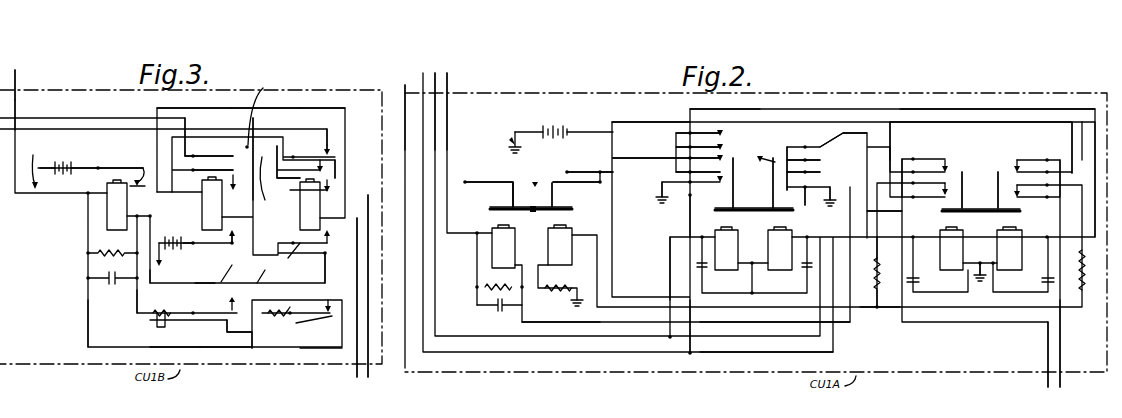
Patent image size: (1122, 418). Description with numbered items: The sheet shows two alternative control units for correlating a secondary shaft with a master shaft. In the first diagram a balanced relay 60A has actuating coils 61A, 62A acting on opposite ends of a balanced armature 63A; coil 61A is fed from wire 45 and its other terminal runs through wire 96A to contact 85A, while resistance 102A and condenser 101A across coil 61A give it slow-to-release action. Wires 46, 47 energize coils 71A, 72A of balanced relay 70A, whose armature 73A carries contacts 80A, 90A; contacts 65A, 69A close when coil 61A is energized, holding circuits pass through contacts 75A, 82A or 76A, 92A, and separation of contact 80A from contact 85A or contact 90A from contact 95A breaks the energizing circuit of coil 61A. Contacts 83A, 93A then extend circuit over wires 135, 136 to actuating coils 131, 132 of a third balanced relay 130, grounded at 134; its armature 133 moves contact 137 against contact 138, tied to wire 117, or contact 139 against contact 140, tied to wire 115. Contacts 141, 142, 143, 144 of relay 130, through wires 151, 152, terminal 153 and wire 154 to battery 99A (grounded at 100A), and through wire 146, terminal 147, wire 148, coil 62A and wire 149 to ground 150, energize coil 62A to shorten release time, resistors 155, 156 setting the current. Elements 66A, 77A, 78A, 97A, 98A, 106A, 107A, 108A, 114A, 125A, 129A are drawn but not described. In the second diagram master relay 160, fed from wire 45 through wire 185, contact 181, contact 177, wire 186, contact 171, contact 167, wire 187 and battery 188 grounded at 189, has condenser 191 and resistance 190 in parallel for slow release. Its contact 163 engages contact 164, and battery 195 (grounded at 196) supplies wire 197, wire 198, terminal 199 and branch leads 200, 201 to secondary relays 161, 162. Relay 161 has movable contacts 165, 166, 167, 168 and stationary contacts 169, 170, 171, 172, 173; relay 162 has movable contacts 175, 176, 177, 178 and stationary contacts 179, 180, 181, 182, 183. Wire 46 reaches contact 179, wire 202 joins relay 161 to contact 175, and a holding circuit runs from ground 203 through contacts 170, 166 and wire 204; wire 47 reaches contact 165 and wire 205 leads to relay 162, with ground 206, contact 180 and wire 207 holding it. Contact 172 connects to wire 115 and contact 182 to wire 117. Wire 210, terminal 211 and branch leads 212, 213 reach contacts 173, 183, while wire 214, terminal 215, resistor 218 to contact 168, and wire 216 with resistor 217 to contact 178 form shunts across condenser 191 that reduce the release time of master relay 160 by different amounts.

In FIG. 3, the wire 45 is at (20, 76).
In FIG. 2, the wire 45 is at (448, 78).
In FIG. 2, the wire 46 is at (405, 88).
In FIG. 3, the wire 47 is at (16, 72).
In FIG. 2, the wire 47 is at (435, 75).
In FIG. 3, the control wire 115 is at (356, 377).
In FIG. 2, the control wire 115 is at (1047, 378).
In FIG. 3, the wire 117 is at (368, 378).
In FIG. 2, the wire 117 is at (1061, 382).
In FIG. 3, the master relay 160 is at (107, 217).
In FIG. 2, the master relay 160 is at (1045, 279).
In FIG. 3, the secondary relay 161 is at (202, 205).
In FIG. 3, the secondary relay 162 is at (320, 205).
In FIG. 3, the movable contact 163 is at (110, 166).
In FIG. 3, the stationary relay contact 164 is at (135, 167).
In FIG. 3, the movable contact 165 is at (225, 156).
In FIG. 3, the movable contact 166 is at (162, 195).
In FIG. 3, the movable contact 167 is at (214, 258).
In FIG. 3, the movable contact 168 is at (212, 329).
In FIG. 3, the stationary contact 169 is at (268, 109).
In FIG. 3, the stationary contact 170 is at (235, 175).
In FIG. 3, the stationary contact 171 is at (204, 284).
In FIG. 3, the contact 172 is at (244, 232).
In FIG. 3, the stationary relay contact 173 is at (230, 306).
In FIG. 3, the movable contact 175 is at (295, 156).
In FIG. 3, the movable contact 176 is at (282, 179).
In FIG. 3, the movable contact 177 is at (295, 258).
In FIG. 3, the movable contact 178 is at (302, 324).
In FIG. 3, the stationary relay contact 179 is at (330, 142).
In FIG. 3, the stationary relay contact 180 is at (336, 178).
In FIG. 3, the stationary relay contact 181 is at (326, 258).
In FIG. 3, the stationary relay contact 182 is at (329, 234).
In FIG. 3, the contact 183 is at (326, 304).
In FIG. 3, the wire 185 is at (151, 284).
In FIG. 3, the wire 186 is at (260, 283).
In FIG. 3, the wire 187 is at (184, 247).
In FIG. 3, the battery 188 is at (170, 238).
In FIG. 3, the ground 189 is at (162, 266).
In FIG. 3, the resistance 190 is at (98, 256).
In FIG. 3, the condenser 191 is at (106, 282).
In FIG. 3, the battery 195 is at (60, 162).
In FIG. 3, the ground 196 is at (39, 162).
In FIG. 3, the wire 197 is at (80, 168).
In FIG. 3, the wire 198 is at (200, 108).
In FIG. 3, the terminal 199 is at (268, 108).
In FIG. 3, the branch lead wire 200 is at (262, 118).
In FIG. 3, the branch lead wire 201 is at (332, 108).
In FIG. 3, the wire 202 is at (195, 121).
In FIG. 3, the ground 203 is at (235, 191).
In FIG. 3, the wire 204 is at (145, 184).
In FIG. 3, the wire 205 is at (262, 188).
In FIG. 3, the ground 206 is at (336, 190).
In FIG. 3, the wire 207 is at (293, 170).
In FIG. 3, the wire 210 is at (88, 327).
In FIG. 3, the terminal 211 is at (261, 347).
In FIG. 3, the branch lead 212 is at (227, 348).
In FIG. 3, the branch lead 213 is at (327, 349).
In FIG. 3, the wire 214 is at (137, 299).
In FIG. 3, the terminal 215 is at (155, 314).
In FIG. 3, the wire 216 is at (175, 348).
In FIG. 3, the resistor 217 is at (272, 318).
In FIG. 3, the resistor 218 is at (160, 328).
In FIG. 2, the balanced relay 60A is at (535, 183).
In FIG. 2, the actuating coil 61A is at (492, 245).
In FIG. 2, the actuating coil 62A is at (560, 238).
In FIG. 2, the balanced armature 63A is at (535, 213).
In FIG. 2, the relay contact 65A is at (560, 186).
In FIG. 2, the contact 66A is at (465, 184).
In FIG. 2, the relay contact 69A is at (567, 170).
In FIG. 2, the balanced relay 70A is at (762, 157).
In FIG. 2, the relay coil 71A is at (720, 243).
In FIG. 2, the relay coil 72A is at (772, 248).
In FIG. 2, the armature 73A is at (765, 214).
In FIG. 2, the contact 75A is at (805, 205).
In FIG. 2, the contact 76A is at (688, 201).
In FIG. 2, the conductor 77A is at (773, 168).
In FIG. 2, the armature bar 78A is at (740, 206).
In FIG. 2, the relay contact 80A is at (844, 139).
In FIG. 2, the contact 82A is at (820, 185).
In FIG. 2, the contact 83A is at (800, 145).
In FIG. 2, the relay contact 85A is at (820, 165).
In FIG. 2, the relay contact 90A is at (676, 148).
In FIG. 2, the contact 92A is at (700, 196).
In FIG. 2, the contact 93A is at (676, 134).
In FIG. 2, the contact 95A is at (690, 182).
In FIG. 2, the wire 96A is at (745, 323).
In FIG. 2, the conductor 97A is at (748, 109).
In FIG. 2, the contact 98A is at (666, 160).
In FIG. 2, the battery 99A is at (562, 124).
In FIG. 2, the ground 100A is at (512, 141).
In FIG. 2, the condenser 101A is at (497, 311).
In FIG. 2, the resistance 102A is at (488, 292).
In FIG. 2, the conductor 106A is at (678, 291).
In FIG. 2, the conductor 107A is at (682, 266).
In FIG. 2, the conductor 108A is at (845, 347).
In FIG. 2, the ground 114A is at (662, 201).
In FIG. 2, the ground 125A is at (574, 301).
In FIG. 2, the capacitor 129A is at (800, 270).
In FIG. 2, the balanced relay 130 is at (990, 170).
In FIG. 2, the actuating coil 131 is at (942, 250).
In FIG. 2, the actuating coil 132 is at (1000, 251).
In FIG. 2, the armature 133 is at (968, 214).
In FIG. 2, the ground 134 is at (980, 282).
In FIG. 2, the wire 135 is at (902, 213).
In FIG. 2, the wire 136 is at (958, 109).
In FIG. 2, the movable contact 137 is at (1037, 170).
In FIG. 2, the stationary relay contact 138 is at (1035, 158).
In FIG. 2, the movable contact 139 is at (918, 168).
In FIG. 2, the contact 140 is at (945, 158).
In FIG. 2, the movable relay contact 141 is at (1012, 213).
In FIG. 2, the stationary relay contact 142 is at (1020, 203).
In FIG. 2, the stationary contact 143 is at (960, 183).
In FIG. 2, the contact 144 is at (948, 176).
In FIG. 2, the wire 146 is at (880, 247).
In FIG. 2, the terminal 147 is at (880, 309).
In FIG. 2, the wire 148 is at (876, 315).
In FIG. 2, the wire 149 is at (552, 286).
In FIG. 2, the ground 150 is at (550, 323).
In FIG. 2, the wire 151 is at (1082, 122).
In FIG. 2, the wire 152 is at (890, 148).
In FIG. 2, the terminal 153 is at (893, 120).
In FIG. 2, the wire 154 is at (663, 122).
In FIG. 2, the resistor 155 is at (1084, 292).
In FIG. 2, the resistor 156 is at (880, 274).